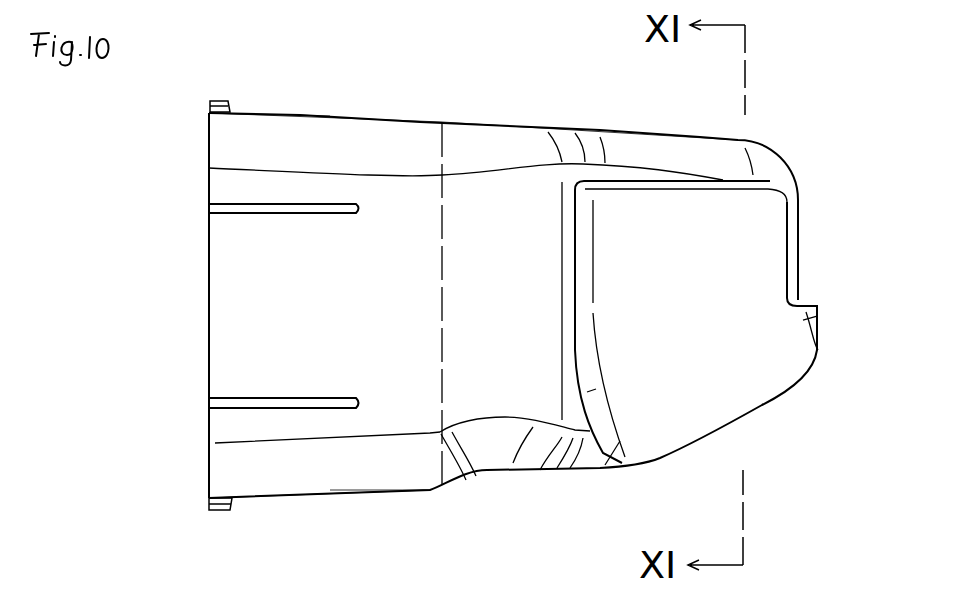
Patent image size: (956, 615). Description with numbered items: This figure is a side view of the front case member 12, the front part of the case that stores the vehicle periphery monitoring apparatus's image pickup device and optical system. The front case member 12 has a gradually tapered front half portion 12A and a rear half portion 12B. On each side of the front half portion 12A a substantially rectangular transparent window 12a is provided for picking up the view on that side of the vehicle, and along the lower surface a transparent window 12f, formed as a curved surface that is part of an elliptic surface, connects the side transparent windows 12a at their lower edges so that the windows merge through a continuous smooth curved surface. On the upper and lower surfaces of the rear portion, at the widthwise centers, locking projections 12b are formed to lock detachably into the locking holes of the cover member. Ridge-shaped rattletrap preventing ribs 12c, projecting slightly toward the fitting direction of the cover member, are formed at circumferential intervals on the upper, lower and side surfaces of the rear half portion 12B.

The front case member 12 is at (425, 118).
The front half portion 12A is at (700, 137).
The rear half portion 12B is at (381, 116).
The transparent window 12a is at (693, 255).
The locking projection 12b is at (216, 98).
The rattletrap preventing rib 12c is at (273, 112).
The transparent window 12f is at (692, 462).